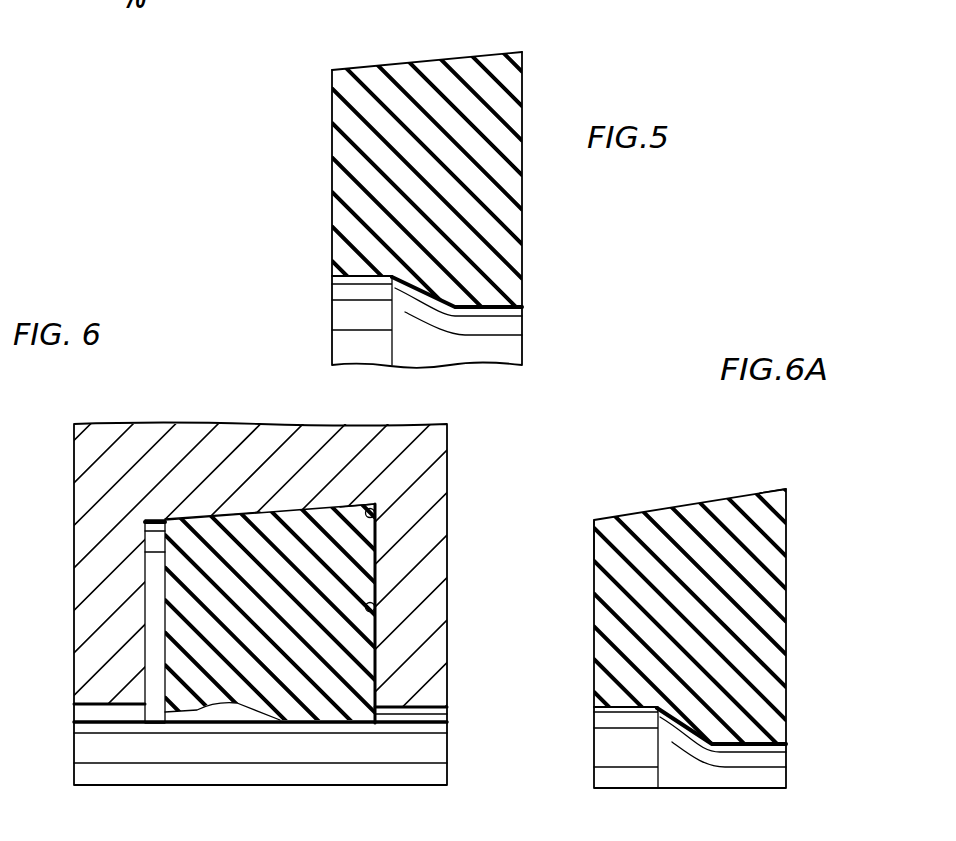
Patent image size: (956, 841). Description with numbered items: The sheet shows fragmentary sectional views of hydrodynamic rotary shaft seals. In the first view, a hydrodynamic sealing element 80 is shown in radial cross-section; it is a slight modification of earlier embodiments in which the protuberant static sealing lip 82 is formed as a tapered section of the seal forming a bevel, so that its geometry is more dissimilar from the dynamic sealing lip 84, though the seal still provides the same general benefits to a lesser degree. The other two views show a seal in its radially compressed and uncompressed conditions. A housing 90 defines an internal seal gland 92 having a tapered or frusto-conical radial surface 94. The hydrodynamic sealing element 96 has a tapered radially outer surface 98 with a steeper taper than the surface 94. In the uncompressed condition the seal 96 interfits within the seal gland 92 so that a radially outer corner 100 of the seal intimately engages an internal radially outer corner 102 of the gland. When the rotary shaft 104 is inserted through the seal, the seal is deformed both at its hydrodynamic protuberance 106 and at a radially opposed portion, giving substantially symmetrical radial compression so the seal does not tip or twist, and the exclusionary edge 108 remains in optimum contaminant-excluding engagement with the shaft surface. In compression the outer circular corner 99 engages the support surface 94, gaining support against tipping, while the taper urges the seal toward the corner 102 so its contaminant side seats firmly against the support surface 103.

In FIG. 5, the hydrodynamic sealing element 80 is at (406, 110).
In FIG. 5, the protuberant static sealing lip 82 is at (498, 62).
In FIG. 5, the dynamic sealing lip 84 is at (483, 292).
In FIG. 6, the housing 90 is at (202, 443).
In FIG. 6, the internal seal gland 92 is at (153, 712).
In FIG. 6, the tapered or frusto-conical radial surface 94 is at (255, 515).
In FIG. 6, the hydrodynamic sealing element 96 is at (250, 678).
In FIG. 6A, the hydrodynamic sealing element 96 is at (638, 682).
In FIG. 6, the tapered radially outer surface 98 is at (316, 505).
In FIG. 6A, the tapered radially outer surface 98 is at (675, 506).
In FIG. 6, the outer circular corner 99 is at (161, 520).
In FIG. 6A, the outer circular corner 99 is at (594, 519).
In FIG. 6, the radially outer corner 100 is at (378, 505).
In FIG. 6A, the radially outer corner 100 is at (786, 490).
In FIG. 6, the internal radially outer corner 102 is at (378, 524).
In FIG. 6, the support surface 103 is at (380, 612).
In FIG. 6, the rotary shaft 104 is at (438, 707).
In FIG. 6, the hydrodynamic protuberance 106 is at (318, 708).
In FIG. 6, the exclusionary edge 108 is at (376, 723).
In FIG. 6A, the exclusionary edge 108 is at (788, 745).